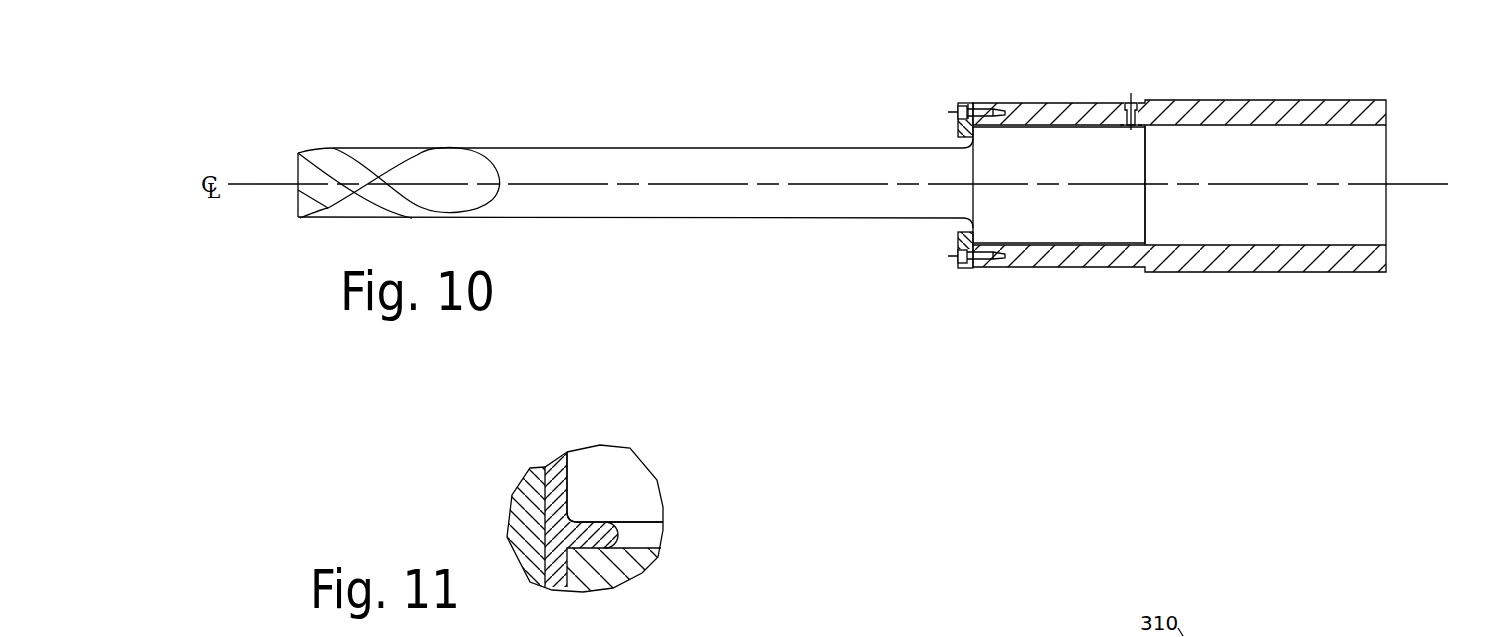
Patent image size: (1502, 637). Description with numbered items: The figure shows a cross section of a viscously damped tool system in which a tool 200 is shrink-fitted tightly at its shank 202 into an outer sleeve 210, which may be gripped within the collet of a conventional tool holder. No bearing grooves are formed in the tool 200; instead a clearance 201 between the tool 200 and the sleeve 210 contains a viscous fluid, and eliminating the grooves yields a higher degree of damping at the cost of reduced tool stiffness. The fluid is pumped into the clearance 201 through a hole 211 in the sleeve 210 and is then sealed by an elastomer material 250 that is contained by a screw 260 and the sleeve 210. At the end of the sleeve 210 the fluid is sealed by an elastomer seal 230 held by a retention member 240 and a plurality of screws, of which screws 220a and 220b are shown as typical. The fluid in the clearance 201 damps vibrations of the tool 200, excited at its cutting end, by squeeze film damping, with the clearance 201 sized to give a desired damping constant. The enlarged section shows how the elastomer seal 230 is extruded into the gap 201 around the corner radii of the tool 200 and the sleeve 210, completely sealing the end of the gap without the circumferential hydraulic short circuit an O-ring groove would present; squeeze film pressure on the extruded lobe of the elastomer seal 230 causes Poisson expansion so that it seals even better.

In FIG. 10, the tool 200 is at (662, 160).
In FIG. 11, the tool 200 is at (608, 480).
In FIG. 10, the clearance 201 is at (1060, 247).
In FIG. 11, the clearance 201 is at (655, 535).
In FIG. 10, the shank 202 is at (1268, 248).
In FIG. 10, the outer sleeve 210 is at (1367, 256).
In FIG. 11, the outer sleeve 210 is at (620, 562).
In FIG. 10, the hole 211 is at (1122, 125).
In FIG. 10, the screw 220a is at (956, 112).
In FIG. 10, the screw 220b is at (958, 257).
In FIG. 10, the elastomer seal 230 is at (972, 108).
In FIG. 11, the elastomer seal 230 is at (556, 470).
In FIG. 10, the retention member 240 is at (958, 128).
In FIG. 11, the retention member 240 is at (521, 553).
In FIG. 10, the elastomer material 250 is at (1128, 108).
In FIG. 10, the screw 260 is at (1138, 95).